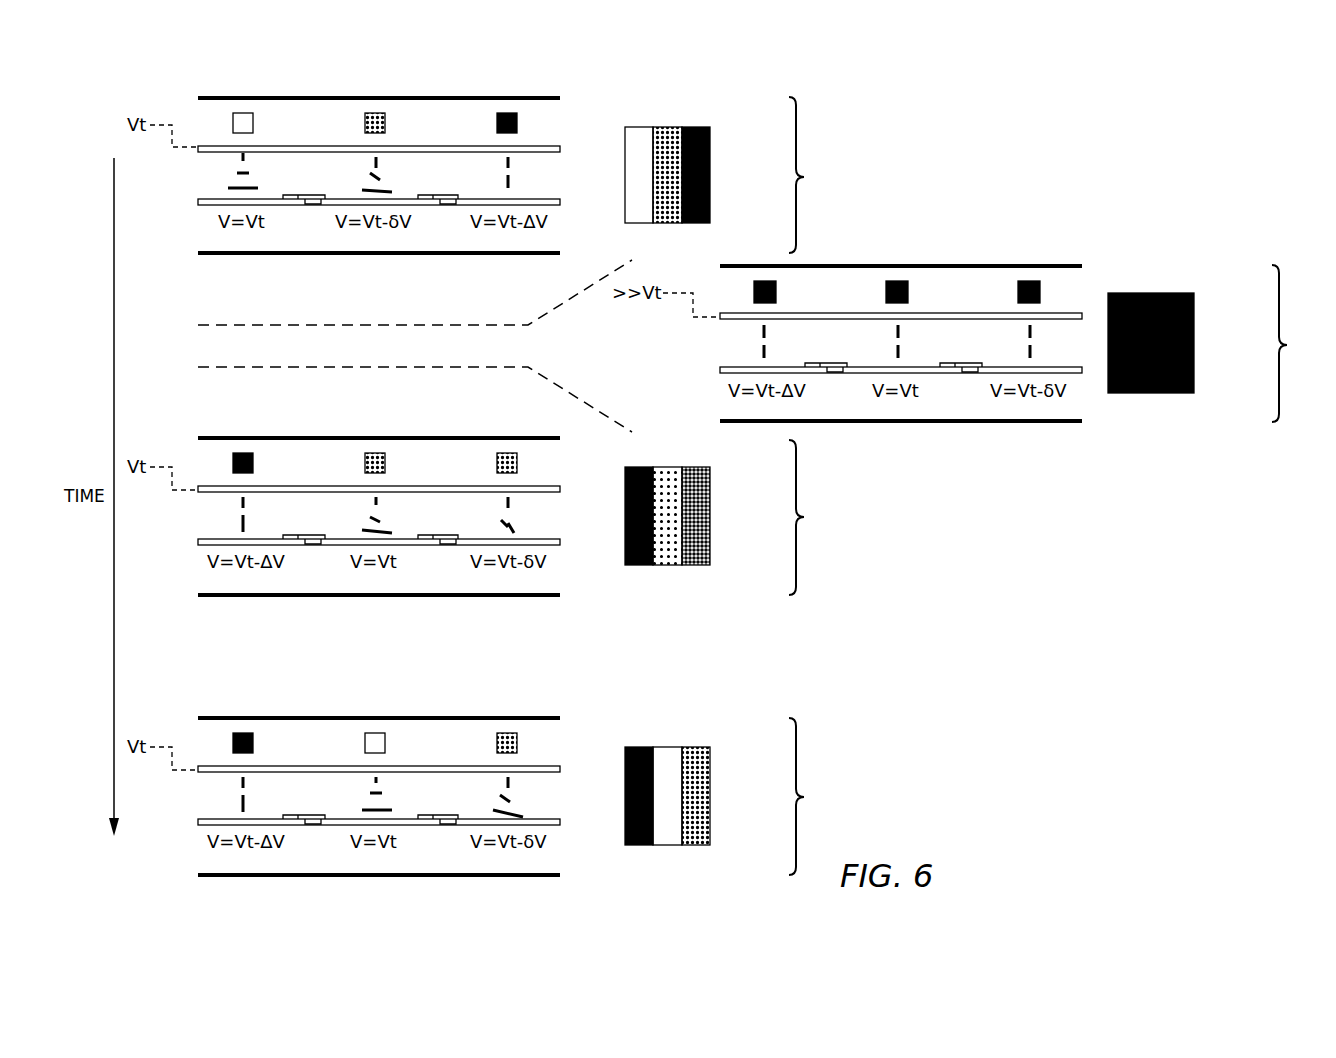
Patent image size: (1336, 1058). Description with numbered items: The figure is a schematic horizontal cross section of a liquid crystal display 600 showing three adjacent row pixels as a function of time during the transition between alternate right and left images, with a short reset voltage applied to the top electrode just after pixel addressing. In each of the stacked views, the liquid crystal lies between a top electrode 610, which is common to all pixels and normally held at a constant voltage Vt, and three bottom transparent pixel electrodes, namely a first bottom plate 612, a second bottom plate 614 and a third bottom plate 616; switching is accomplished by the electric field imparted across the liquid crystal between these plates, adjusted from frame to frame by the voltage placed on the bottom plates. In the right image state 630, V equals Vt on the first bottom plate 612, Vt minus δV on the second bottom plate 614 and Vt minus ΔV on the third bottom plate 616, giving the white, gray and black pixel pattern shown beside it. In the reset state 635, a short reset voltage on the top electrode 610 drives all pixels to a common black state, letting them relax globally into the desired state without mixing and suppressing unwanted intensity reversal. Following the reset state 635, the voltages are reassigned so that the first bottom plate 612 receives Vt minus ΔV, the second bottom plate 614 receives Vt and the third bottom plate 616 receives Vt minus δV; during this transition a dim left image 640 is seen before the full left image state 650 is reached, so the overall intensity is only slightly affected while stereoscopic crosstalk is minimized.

The liquid crystal display 600 is at (963, 600).
The top electrode 610 is at (543, 146).
The first bottom plate 612 is at (198, 199).
The second bottom plate 614 is at (347, 199).
The third bottom plate 616 is at (553, 199).
The right image state 630 is at (737, 175).
The reset state 635 is at (1218, 343).
The dim left image 640 is at (737, 517).
The left image state 650 is at (737, 796).